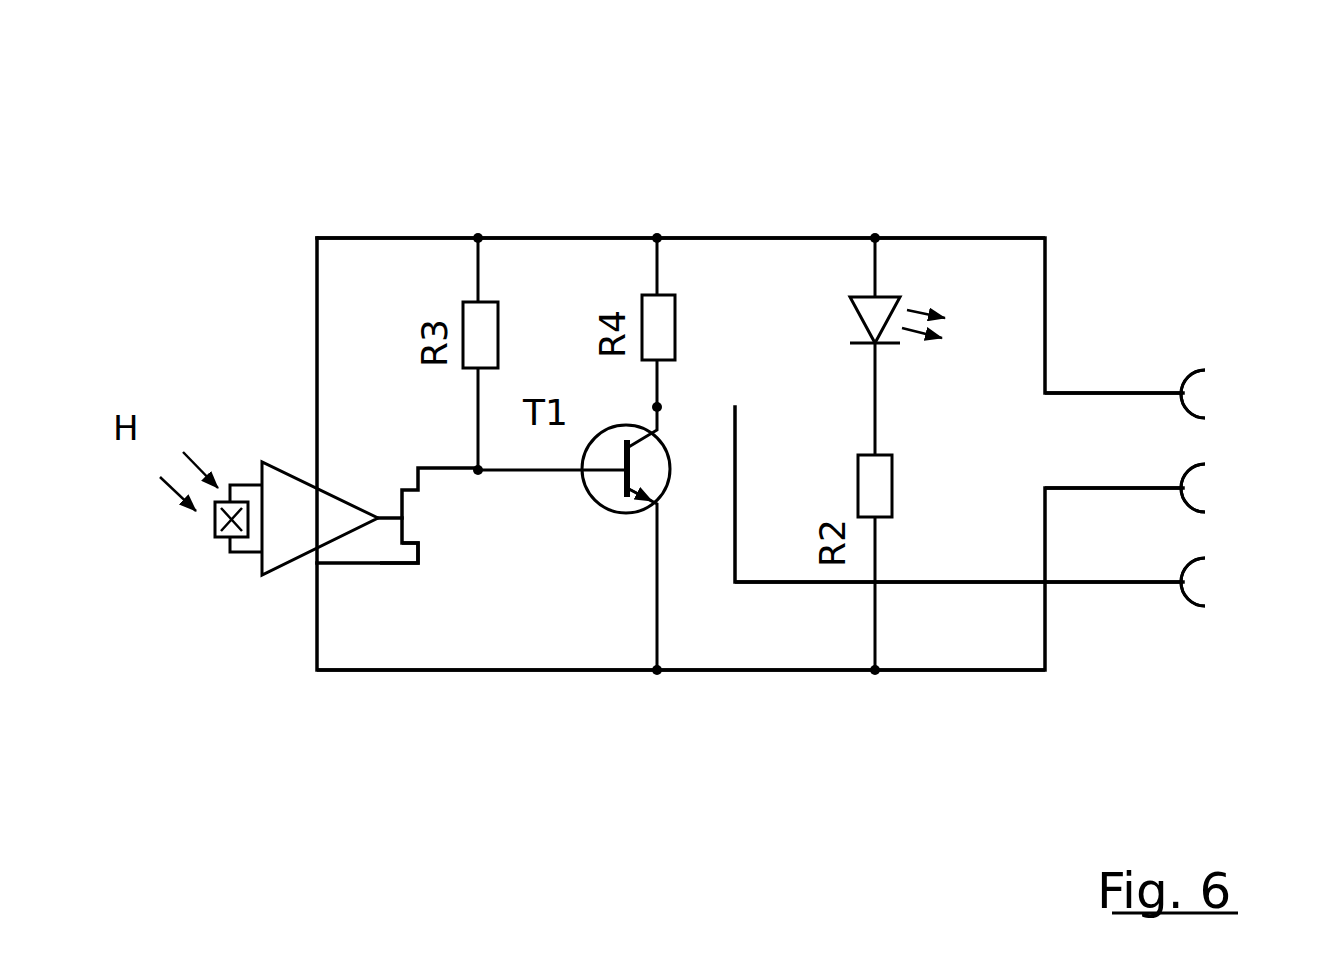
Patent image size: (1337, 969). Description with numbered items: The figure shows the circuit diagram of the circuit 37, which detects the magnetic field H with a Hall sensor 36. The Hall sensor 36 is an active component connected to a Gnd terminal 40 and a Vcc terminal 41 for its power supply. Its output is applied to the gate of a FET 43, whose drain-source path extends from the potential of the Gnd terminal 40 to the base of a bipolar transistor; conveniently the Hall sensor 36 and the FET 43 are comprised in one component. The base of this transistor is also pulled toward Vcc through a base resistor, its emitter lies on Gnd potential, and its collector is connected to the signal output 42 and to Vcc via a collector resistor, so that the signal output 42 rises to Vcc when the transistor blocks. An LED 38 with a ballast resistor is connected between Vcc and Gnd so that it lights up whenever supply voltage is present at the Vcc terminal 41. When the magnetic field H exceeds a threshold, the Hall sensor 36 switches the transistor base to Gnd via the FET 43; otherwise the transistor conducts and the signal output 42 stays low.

The Hall sensor 36 is at (262, 465).
The circuit 37 is at (820, 158).
The LED 38 is at (860, 295).
The Gnd terminal 40 is at (1157, 487).
The Vcc terminal 41 is at (1083, 393).
The signal output 42 is at (1120, 585).
The FET 43 is at (402, 565).